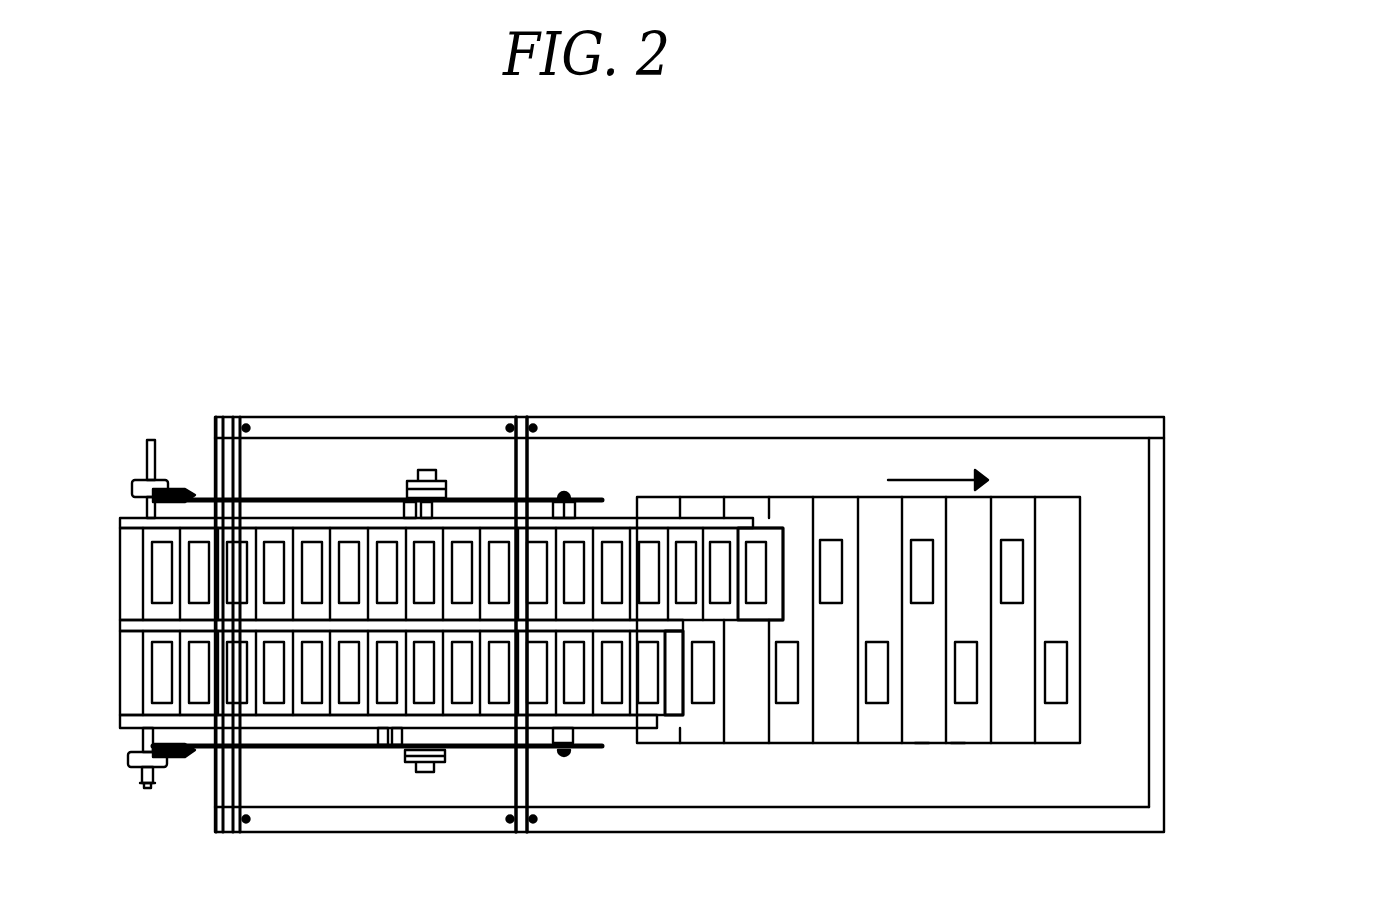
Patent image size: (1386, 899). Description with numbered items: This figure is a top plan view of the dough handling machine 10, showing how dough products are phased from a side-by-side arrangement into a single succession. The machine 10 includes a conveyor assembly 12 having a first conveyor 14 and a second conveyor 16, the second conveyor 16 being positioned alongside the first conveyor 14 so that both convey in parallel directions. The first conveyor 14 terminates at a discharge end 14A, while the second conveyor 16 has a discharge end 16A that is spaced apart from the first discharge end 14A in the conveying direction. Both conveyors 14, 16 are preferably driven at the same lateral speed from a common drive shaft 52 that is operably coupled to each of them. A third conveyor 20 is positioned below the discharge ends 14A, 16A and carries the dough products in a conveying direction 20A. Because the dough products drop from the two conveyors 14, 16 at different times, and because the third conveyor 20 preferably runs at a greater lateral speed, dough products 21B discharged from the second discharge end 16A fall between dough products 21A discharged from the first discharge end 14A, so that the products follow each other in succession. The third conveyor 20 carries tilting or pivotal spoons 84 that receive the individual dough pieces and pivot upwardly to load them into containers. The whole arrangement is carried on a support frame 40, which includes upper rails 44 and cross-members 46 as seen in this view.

The dough handling machine 10 is at (791, 595).
The conveyor assembly 12 is at (341, 467).
The first conveyor 14 is at (517, 577).
The discharge end 14A is at (700, 620).
The second conveyor 16 is at (558, 443).
The discharge end 16A is at (790, 506).
The third conveyor 20 is at (987, 574).
The conveying direction 20A is at (940, 497).
The dough products 21A is at (963, 642).
The dough products 21B is at (923, 540).
The support frame 40 is at (1180, 784).
The upper rails 44 is at (463, 417).
The cross-members 46 is at (240, 460).
The common drive shaft 52 is at (147, 783).
The spoons 84 is at (922, 743).